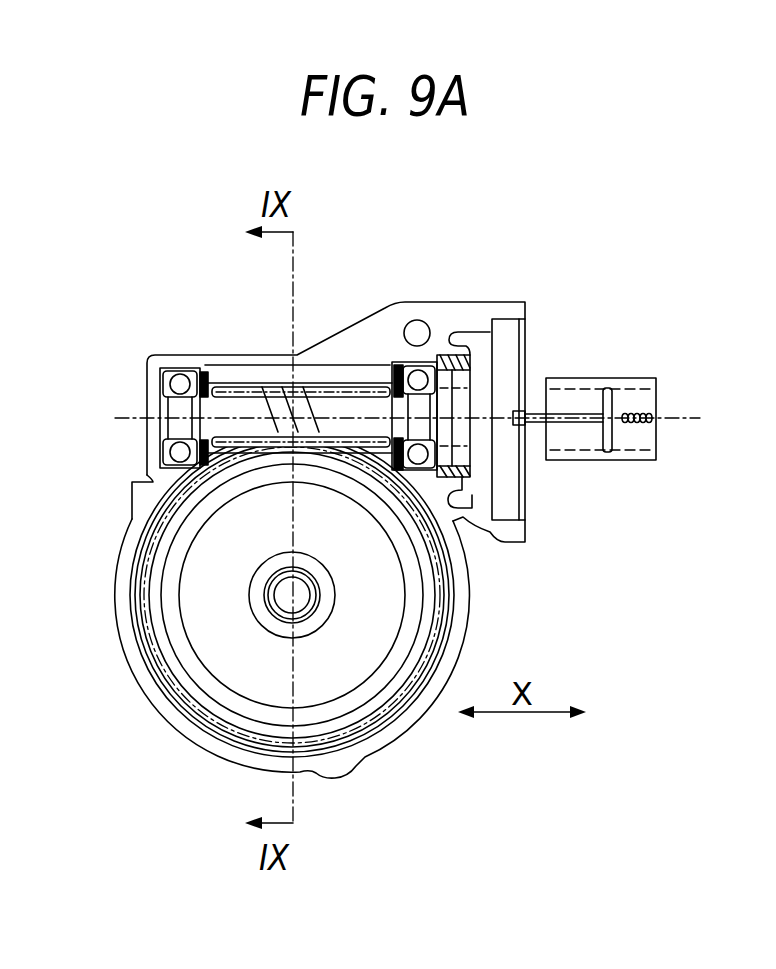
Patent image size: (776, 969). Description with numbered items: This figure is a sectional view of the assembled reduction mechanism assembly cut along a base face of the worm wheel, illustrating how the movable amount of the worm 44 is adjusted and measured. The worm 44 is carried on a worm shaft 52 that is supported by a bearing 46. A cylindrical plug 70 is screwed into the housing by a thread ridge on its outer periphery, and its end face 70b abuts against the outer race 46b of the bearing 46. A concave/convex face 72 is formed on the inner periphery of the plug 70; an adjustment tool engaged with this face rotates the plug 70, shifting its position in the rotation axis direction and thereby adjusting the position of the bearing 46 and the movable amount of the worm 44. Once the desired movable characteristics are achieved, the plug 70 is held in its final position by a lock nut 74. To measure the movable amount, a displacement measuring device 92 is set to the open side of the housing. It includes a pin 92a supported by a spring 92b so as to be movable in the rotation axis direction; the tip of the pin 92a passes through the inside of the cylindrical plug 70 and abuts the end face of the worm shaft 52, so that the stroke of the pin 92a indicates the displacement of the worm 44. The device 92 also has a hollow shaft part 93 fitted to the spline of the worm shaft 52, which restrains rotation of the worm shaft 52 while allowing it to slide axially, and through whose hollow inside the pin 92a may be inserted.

The worm 44 is at (318, 408).
The bearing 46 is at (405, 362).
The outer race 46b is at (402, 367).
The worm shaft 52 is at (236, 400).
The plug 70 is at (473, 415).
The end face 70b is at (437, 355).
The concave/convex face 72 is at (486, 359).
The lock nut 74 is at (465, 492).
The displacement measuring device 92 is at (640, 372).
The pin 92a is at (582, 428).
The spring 92b is at (652, 417).
The hollow shaft part 93 is at (577, 388).